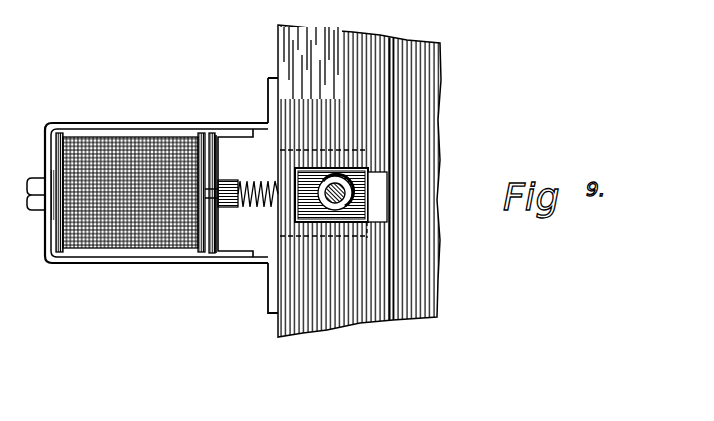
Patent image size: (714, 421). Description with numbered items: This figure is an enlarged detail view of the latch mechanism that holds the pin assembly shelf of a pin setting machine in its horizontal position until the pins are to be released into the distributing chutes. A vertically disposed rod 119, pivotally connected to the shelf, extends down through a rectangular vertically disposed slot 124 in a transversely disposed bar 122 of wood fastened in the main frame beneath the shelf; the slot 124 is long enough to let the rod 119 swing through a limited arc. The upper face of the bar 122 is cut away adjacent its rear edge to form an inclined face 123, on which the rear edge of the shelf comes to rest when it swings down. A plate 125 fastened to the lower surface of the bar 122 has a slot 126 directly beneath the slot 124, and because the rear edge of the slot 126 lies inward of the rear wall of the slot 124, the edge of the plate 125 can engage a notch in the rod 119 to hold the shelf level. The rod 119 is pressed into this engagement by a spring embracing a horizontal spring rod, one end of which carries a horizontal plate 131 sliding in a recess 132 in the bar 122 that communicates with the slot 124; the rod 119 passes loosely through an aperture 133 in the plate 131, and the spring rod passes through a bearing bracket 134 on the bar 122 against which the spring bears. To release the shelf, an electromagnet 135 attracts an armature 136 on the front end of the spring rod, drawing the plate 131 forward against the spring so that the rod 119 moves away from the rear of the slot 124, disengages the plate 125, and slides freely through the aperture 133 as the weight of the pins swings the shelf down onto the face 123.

The rod 119 is at (343, 224).
The bar 122 is at (392, 318).
The inclined face 123 is at (437, 96).
The slot 124 is at (382, 176).
The plate 125 is at (316, 222).
The slot 126 is at (357, 152).
The horizontal plate 131 is at (322, 182).
The recess 132 is at (287, 168).
The aperture 133 is at (345, 204).
The bearing bracket 134 is at (229, 136).
The electromagnet 135 is at (127, 145).
The armature 136 is at (213, 132).